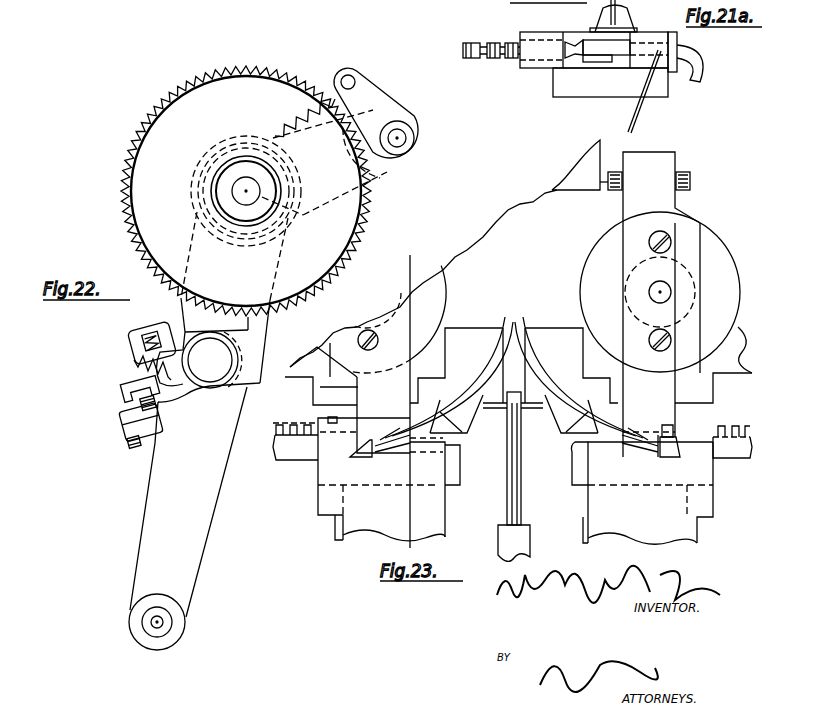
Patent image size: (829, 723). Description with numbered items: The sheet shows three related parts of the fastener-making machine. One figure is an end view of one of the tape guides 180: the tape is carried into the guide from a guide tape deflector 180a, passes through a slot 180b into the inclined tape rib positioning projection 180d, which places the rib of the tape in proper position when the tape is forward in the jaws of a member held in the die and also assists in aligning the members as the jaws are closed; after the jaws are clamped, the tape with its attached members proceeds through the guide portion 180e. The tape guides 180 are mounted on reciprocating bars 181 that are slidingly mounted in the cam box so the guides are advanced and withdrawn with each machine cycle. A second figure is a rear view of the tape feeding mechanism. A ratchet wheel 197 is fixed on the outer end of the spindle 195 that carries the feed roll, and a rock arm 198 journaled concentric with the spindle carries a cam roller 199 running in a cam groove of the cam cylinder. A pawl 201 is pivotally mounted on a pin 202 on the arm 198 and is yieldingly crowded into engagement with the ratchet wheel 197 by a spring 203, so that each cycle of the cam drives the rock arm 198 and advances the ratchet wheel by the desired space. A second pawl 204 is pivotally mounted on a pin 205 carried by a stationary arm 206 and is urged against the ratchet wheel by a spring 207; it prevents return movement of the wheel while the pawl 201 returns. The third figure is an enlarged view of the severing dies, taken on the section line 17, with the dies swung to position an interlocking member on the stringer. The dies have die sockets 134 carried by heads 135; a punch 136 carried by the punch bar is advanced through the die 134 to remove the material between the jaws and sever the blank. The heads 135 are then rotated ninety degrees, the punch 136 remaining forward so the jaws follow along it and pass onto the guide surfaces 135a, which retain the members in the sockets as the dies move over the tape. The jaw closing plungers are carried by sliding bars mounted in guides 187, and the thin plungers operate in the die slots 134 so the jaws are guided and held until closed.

In FIG. 23, the section line 17- 17 is at (403, 398).
In FIG. 23, the die socket 134 is at (362, 433).
In FIG. 23, the head 135 is at (683, 380).
In FIG. 23, the guide surface 135a is at (458, 427).
In FIG. 23, the punch 136 is at (521, 452).
In FIG. 21A, the tape guide 180 is at (640, 30).
In FIG. 23, the tape guide 180 is at (320, 473).
In FIG. 21A, the guide tape deflector 180a is at (657, 98).
In FIG. 21A, the slot 180b is at (652, 57).
In FIG. 21A, the inclined tape rib positioning projection 180d is at (595, 58).
In FIG. 21A, the guide portion 180e is at (537, 58).
In FIG. 23, the reciprocating bar 181 is at (360, 532).
In FIG. 23, the guide 187 is at (300, 383).
In FIG. 22, the spindle 195 is at (259, 193).
In FIG. 22, the ratchet wheel 197 is at (137, 142).
In FIG. 22, the rock arm 198 is at (158, 471).
In FIG. 22, the cam roller 199 is at (140, 637).
In FIG. 22, the pawl 201 is at (245, 358).
In FIG. 22, the pin 202 is at (207, 375).
In FIG. 22, the spring 203 is at (134, 358).
In FIG. 22, the pawl 204 is at (380, 107).
In FIG. 22, the pin 205 is at (400, 140).
In FIG. 22, the stationary arm 206 is at (383, 177).
In FIG. 22, the spring 207 is at (342, 92).